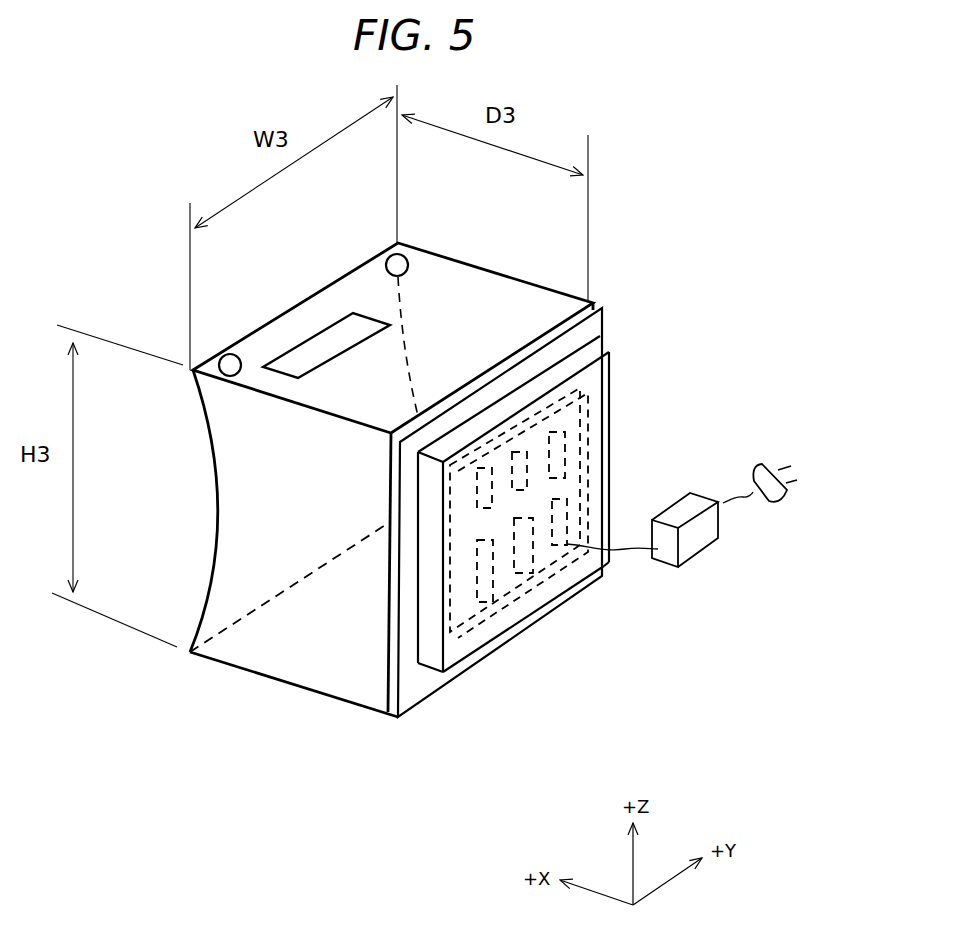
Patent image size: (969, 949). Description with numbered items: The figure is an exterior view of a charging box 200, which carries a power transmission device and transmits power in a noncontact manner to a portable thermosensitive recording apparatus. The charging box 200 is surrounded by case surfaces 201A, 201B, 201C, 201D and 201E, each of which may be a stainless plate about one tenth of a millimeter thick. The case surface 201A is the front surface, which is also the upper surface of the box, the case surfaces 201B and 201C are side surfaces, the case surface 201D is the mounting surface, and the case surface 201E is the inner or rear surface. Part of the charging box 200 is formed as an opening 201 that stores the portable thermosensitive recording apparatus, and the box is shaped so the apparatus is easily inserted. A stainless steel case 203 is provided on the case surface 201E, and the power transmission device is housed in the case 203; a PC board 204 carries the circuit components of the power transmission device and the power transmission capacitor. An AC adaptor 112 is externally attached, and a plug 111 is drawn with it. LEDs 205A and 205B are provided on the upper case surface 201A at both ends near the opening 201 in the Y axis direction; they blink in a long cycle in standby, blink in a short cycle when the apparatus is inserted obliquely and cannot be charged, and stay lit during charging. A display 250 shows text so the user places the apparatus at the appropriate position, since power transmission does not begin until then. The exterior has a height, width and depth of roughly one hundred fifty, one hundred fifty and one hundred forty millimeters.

The charging box 200 is at (160, 323).
The opening 201 is at (193, 430).
The case surface 201A is at (367, 297).
The case surface 201B is at (517, 272).
The case surface 201C is at (237, 530).
The case surface 201D is at (323, 700).
The case surface 201E is at (600, 310).
The case 203 is at (610, 415).
The PC board 204 is at (568, 490).
The LED 205A is at (235, 355).
The LED 205B is at (396, 255).
The display 250 is at (325, 352).
The power plug 111 is at (780, 458).
The AC adaptor 112 is at (700, 535).